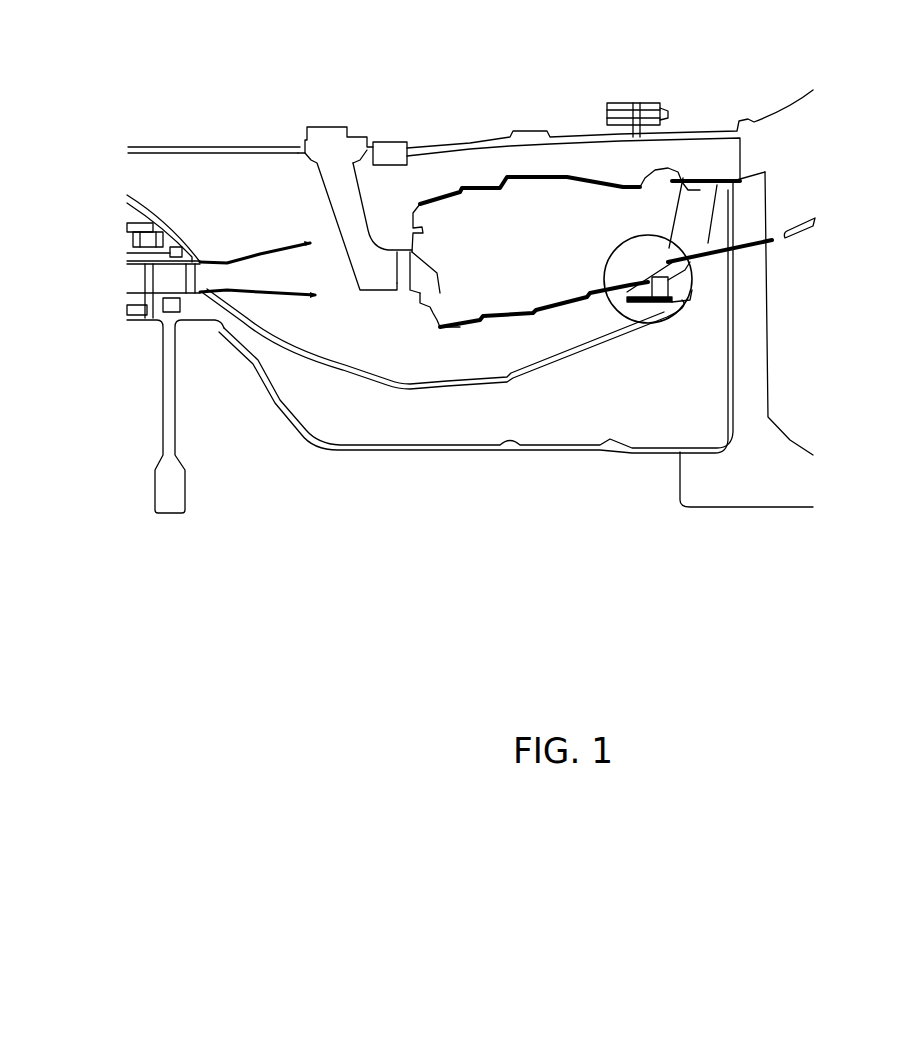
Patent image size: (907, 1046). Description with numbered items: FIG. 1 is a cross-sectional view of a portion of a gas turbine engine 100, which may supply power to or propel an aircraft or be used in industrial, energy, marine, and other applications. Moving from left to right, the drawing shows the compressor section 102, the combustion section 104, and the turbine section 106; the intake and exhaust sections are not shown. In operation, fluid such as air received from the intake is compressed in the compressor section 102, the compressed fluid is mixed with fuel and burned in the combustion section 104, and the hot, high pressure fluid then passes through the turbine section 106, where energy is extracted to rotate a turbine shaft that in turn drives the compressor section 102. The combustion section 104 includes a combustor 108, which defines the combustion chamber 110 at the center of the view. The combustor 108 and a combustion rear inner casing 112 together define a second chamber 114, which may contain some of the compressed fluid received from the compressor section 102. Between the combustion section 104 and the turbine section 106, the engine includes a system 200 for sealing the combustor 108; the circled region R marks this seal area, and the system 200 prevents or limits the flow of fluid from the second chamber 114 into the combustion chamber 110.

The gas turbine engine 100 is at (300, 83).
The compressor section 102 is at (207, 247).
The combustion section 104 is at (466, 148).
The turbine section 106 is at (794, 533).
The combustor 108 is at (528, 178).
The combustion chamber 110 is at (526, 261).
The combustion rear inner casing 112 is at (597, 350).
The second chamber 114 is at (576, 348).
The system for sealing the combustor 200 is at (663, 222).
The detail region R is at (615, 255).